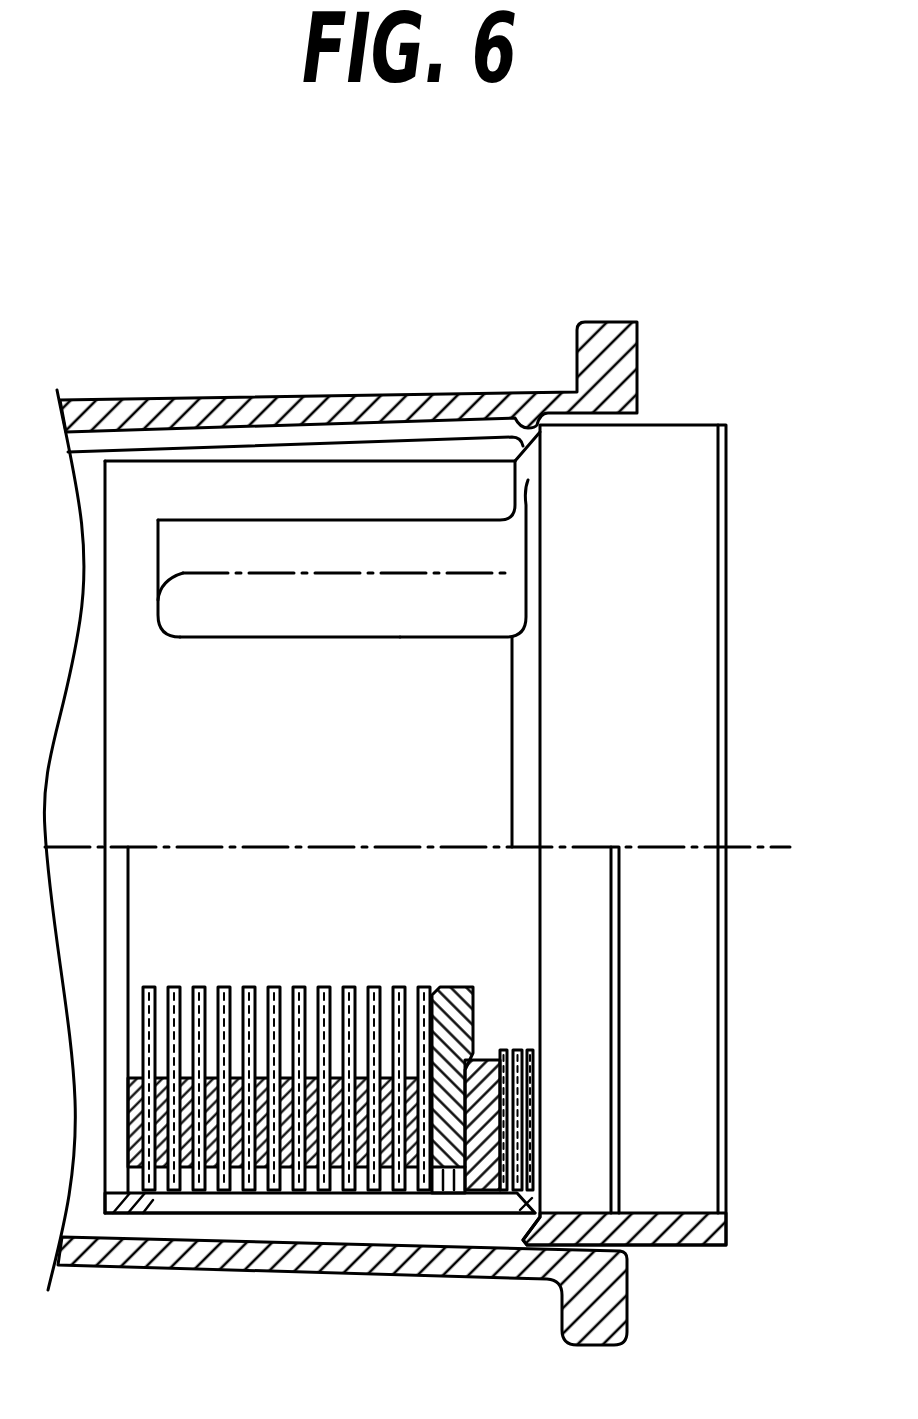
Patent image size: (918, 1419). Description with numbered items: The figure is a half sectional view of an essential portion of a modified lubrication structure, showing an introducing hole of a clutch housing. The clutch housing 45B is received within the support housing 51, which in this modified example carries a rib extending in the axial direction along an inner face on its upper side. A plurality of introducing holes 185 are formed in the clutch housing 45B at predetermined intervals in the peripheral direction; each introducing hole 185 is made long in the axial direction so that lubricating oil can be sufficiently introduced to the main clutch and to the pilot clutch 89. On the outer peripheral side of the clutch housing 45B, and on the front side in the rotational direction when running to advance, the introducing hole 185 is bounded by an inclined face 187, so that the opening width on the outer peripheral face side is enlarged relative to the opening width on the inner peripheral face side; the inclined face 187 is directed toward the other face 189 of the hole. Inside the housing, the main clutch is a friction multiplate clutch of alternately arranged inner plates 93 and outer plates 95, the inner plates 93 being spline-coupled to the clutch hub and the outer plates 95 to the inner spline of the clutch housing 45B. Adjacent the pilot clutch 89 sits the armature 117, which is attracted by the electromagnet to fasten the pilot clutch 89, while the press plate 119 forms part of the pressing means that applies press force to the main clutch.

The support housing 51 is at (496, 388).
The clutch housing 45B is at (692, 418).
The introducing hole 185 is at (347, 512).
The inclined face 187 is at (420, 545).
The other face 189 is at (258, 637).
The inner plate 93 is at (302, 985).
The pilot clutch 89 is at (515, 1043).
The outer plate 95 is at (187, 1170).
The press plate 119 is at (440, 1143).
The armature 117 is at (482, 1170).